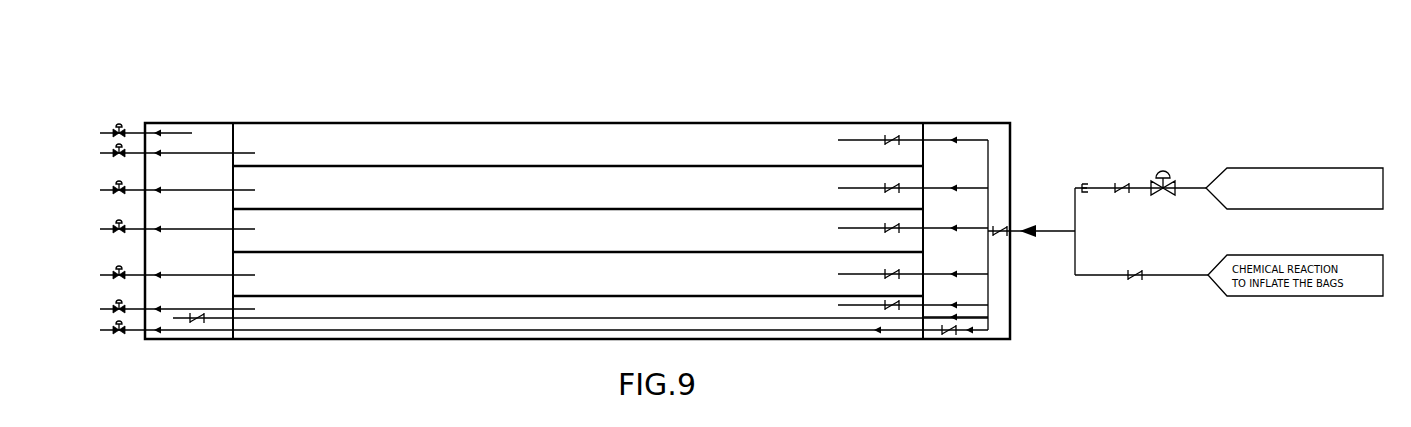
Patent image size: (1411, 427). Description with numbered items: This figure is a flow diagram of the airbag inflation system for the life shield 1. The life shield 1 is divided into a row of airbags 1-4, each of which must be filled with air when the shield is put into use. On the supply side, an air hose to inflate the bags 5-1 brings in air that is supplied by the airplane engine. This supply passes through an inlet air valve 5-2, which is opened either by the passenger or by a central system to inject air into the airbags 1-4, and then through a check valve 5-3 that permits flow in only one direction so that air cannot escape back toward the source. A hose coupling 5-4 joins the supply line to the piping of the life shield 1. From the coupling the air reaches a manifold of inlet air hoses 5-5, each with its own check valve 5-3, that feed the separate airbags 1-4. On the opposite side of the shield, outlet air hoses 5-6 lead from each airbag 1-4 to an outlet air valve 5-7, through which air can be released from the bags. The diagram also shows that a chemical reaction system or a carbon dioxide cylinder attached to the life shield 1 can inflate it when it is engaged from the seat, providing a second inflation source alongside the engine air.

The life shield 1 is at (572, 123).
The airbags 1-4 is at (460, 232).
The air hose to inflate the bags 5-1 is at (1207, 187).
The inlet air valve 5-2 is at (1163, 170).
The check valve 5-3 is at (890, 140).
The hose coupling 5-4 is at (1083, 184).
The inlet air hoses 5-5 is at (975, 140).
The outlet air hoses 5-6 is at (222, 153).
The outlet air valve 5-7 is at (120, 127).